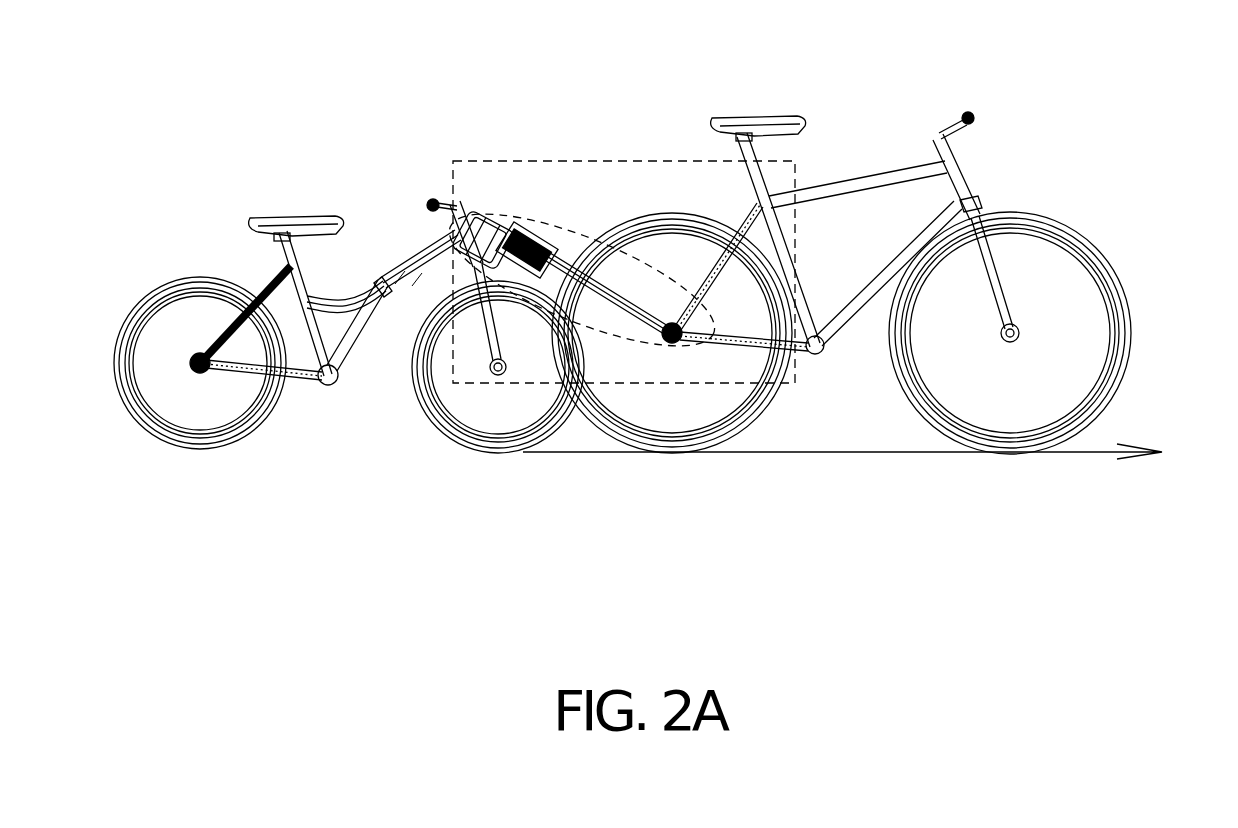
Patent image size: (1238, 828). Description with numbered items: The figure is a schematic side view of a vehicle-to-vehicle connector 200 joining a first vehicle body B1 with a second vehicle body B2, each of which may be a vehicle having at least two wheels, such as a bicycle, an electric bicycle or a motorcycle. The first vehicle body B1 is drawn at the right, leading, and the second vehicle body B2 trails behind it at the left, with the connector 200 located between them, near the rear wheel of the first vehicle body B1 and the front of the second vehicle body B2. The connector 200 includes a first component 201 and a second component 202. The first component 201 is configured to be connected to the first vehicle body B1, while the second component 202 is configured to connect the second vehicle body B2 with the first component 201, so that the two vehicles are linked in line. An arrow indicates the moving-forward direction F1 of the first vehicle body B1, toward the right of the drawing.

The first vehicle body B1 is at (873, 184).
The second vehicle body B2 is at (383, 278).
The vehicle-to-vehicle connector 200 is at (660, 161).
The first component 201 is at (540, 222).
The second component 202 is at (470, 212).
The moving-forward direction F1 is at (870, 449).